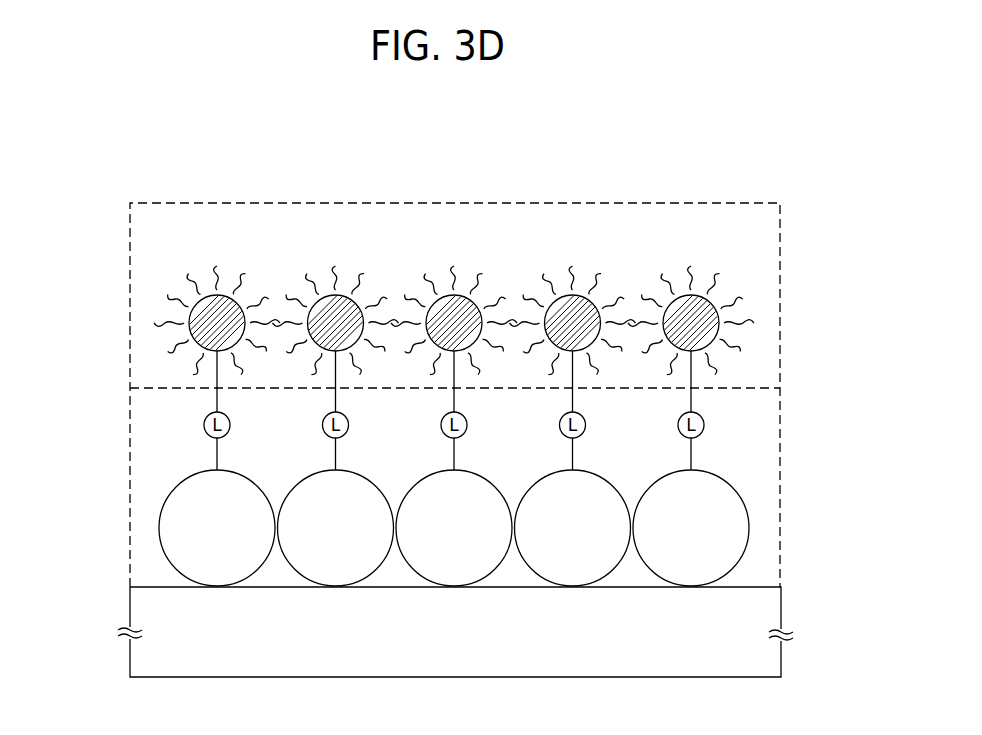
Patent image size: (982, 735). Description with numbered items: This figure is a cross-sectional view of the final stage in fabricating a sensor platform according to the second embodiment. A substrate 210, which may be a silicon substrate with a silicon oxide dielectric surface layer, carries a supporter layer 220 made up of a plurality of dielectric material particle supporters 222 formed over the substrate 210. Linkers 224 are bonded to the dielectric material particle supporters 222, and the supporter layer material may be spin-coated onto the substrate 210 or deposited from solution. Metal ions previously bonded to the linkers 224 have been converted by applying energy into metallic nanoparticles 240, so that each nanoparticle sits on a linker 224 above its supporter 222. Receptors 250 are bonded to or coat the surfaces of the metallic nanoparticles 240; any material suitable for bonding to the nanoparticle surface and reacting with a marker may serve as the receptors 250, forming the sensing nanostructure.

The substrate 210 is at (781, 607).
The supporter layer 220 is at (76, 415).
The dielectric material particle supporters 222 is at (170, 533).
The linkers 224 is at (204, 425).
The metallic nanoparticles 240 is at (700, 296).
The receptors 250 is at (645, 296).